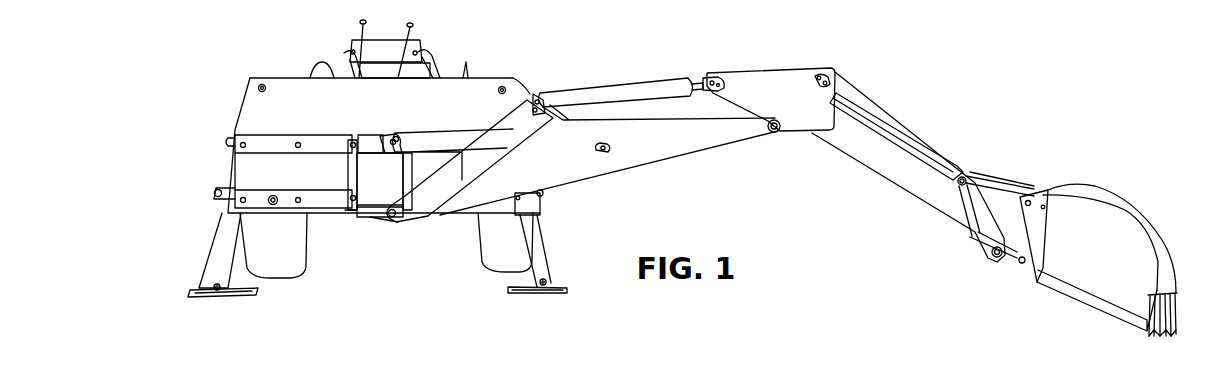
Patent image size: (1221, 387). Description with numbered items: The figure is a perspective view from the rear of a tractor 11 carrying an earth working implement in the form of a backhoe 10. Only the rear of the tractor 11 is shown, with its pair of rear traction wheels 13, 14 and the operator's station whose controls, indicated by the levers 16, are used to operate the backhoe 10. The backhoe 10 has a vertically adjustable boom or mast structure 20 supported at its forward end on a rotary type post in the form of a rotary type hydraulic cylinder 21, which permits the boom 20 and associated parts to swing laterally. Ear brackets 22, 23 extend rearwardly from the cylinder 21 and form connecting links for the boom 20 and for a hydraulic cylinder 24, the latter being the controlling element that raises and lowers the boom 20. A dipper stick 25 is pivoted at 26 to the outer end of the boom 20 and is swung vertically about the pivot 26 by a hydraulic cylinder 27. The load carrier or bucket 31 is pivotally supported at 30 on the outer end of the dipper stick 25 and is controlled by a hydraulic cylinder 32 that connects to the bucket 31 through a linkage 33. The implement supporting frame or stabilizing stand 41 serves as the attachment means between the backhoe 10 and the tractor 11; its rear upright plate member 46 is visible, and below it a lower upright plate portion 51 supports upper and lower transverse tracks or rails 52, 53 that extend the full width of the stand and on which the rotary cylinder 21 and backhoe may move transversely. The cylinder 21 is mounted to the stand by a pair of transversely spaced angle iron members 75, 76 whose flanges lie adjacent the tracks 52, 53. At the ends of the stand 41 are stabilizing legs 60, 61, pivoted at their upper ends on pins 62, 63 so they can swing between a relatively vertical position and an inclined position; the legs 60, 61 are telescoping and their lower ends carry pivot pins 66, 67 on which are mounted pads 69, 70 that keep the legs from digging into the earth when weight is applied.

The backhoe 10 is at (748, 63).
The tractor 11 is at (428, 42).
The rear traction wheel 13 is at (284, 272).
The rear traction wheel 14 is at (488, 266).
The levers 16 is at (366, 32).
The boom 20 is at (700, 146).
The rotary type hydraulic cylinder 21 is at (365, 178).
The ear bracket 22 is at (385, 207).
The ear bracket 23 is at (376, 130).
The hydraulic cylinder 24 is at (441, 136).
The dipper stick 25 is at (870, 161).
The pivot 26 is at (774, 132).
The hydraulic cylinder 27 is at (634, 90).
The pivot 30 is at (1021, 265).
The bucket 31 is at (1127, 234).
The hydraulic cylinder 32 is at (906, 130).
The linkage 33 is at (1000, 190).
The stabilizing stand 41 is at (499, 76).
The rear upright plate member 46 is at (282, 87).
The lower upright plate portion 51 is at (245, 167).
The upper transverse track 52 is at (290, 137).
The lower transverse track 53 is at (262, 196).
The stabilizing leg 60 is at (210, 218).
The stabilizing leg 61 is at (548, 213).
The pivot pin 62 is at (256, 84).
The pivot pin 63 is at (514, 83).
The pivot pin 66 is at (212, 284).
The pivot pin 67 is at (546, 280).
The pad 69 is at (243, 297).
The pad 70 is at (556, 295).
The angle iron member 75 is at (339, 166).
The angle iron member 76 is at (422, 169).